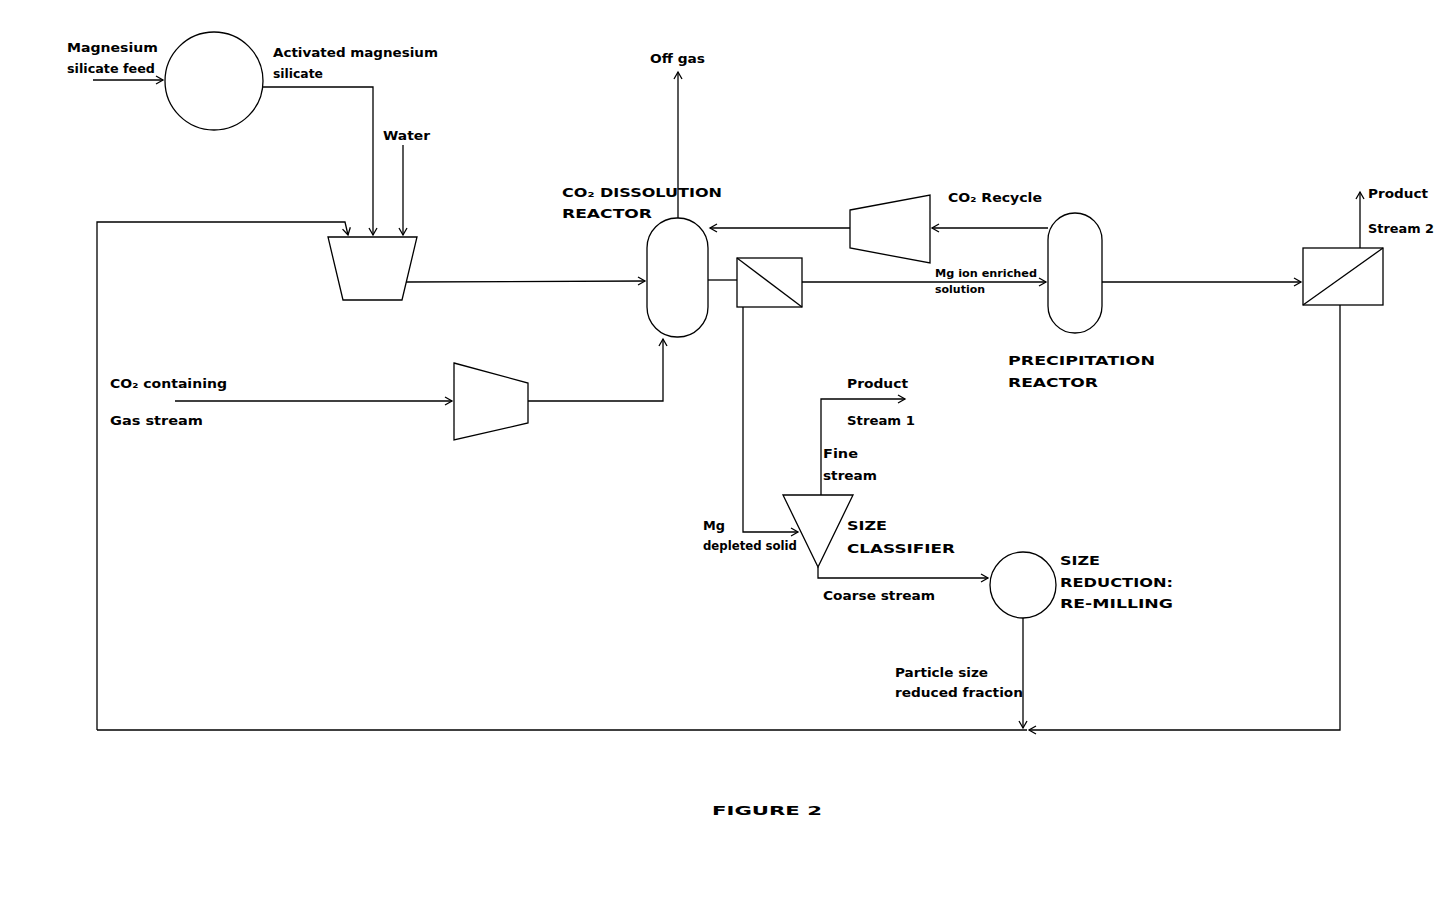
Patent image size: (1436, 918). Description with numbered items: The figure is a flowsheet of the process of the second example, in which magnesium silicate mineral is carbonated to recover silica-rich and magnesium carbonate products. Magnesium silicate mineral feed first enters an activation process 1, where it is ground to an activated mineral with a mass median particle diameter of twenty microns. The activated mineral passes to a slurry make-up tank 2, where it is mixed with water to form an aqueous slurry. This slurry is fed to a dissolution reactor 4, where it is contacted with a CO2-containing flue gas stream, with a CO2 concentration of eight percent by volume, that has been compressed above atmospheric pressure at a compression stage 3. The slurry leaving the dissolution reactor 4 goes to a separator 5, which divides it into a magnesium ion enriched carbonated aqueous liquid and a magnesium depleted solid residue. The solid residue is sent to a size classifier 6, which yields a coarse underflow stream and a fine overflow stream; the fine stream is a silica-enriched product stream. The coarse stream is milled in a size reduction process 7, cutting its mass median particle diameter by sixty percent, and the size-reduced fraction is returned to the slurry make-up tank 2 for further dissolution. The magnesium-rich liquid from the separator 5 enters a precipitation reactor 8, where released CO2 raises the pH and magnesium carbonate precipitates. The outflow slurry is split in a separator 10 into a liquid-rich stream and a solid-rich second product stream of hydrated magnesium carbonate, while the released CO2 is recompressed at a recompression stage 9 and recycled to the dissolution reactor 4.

The activation process 1 is at (214, 81).
The slurry make-up tank 2 is at (372, 268).
The compression of CO2-containing gas stream 3 is at (491, 401).
The dissolution reactor 4 is at (677, 277).
The separator 5 is at (769, 282).
The size classifier 6 is at (818, 531).
The size reduction (milling) process 7 is at (1023, 585).
The precipitation reactor 8 is at (1075, 273).
The recompression of released CO2 9 is at (890, 229).
The separator 10 is at (1343, 276).